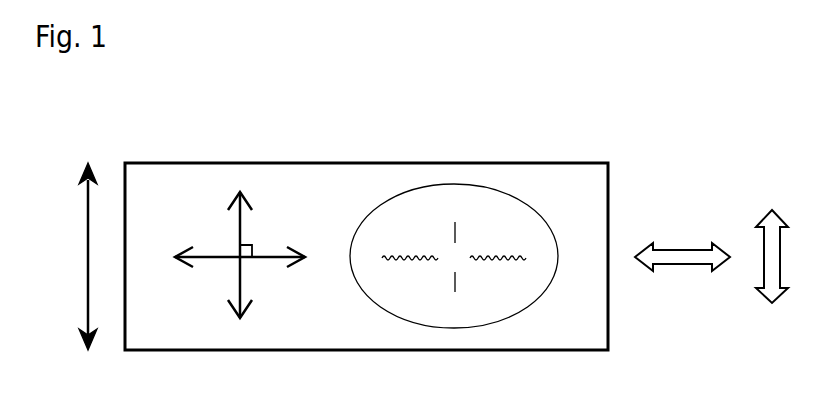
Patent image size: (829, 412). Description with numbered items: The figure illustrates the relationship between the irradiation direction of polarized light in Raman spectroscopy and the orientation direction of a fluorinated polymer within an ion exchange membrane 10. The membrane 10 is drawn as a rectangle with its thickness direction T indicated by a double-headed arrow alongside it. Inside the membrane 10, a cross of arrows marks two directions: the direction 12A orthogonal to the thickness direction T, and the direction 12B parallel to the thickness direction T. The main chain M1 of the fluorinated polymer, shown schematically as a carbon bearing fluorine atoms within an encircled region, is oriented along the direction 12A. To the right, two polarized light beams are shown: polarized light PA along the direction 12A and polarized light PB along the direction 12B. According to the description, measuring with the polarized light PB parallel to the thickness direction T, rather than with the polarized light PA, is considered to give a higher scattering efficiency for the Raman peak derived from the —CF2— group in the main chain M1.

The ion exchange membrane 10 is at (560, 153).
The thickness direction T is at (88, 255).
The direction orthogonal to the thickness direction 12A is at (270, 258).
The direction parallel to the thickness direction 12B is at (237, 270).
The main chain of the fluorinated polymer M1 is at (513, 313).
The polarized light along the direction orthogonal to the thickness direction PA is at (673, 258).
The polarized light along the direction parallel to the thickness direction PB is at (772, 290).